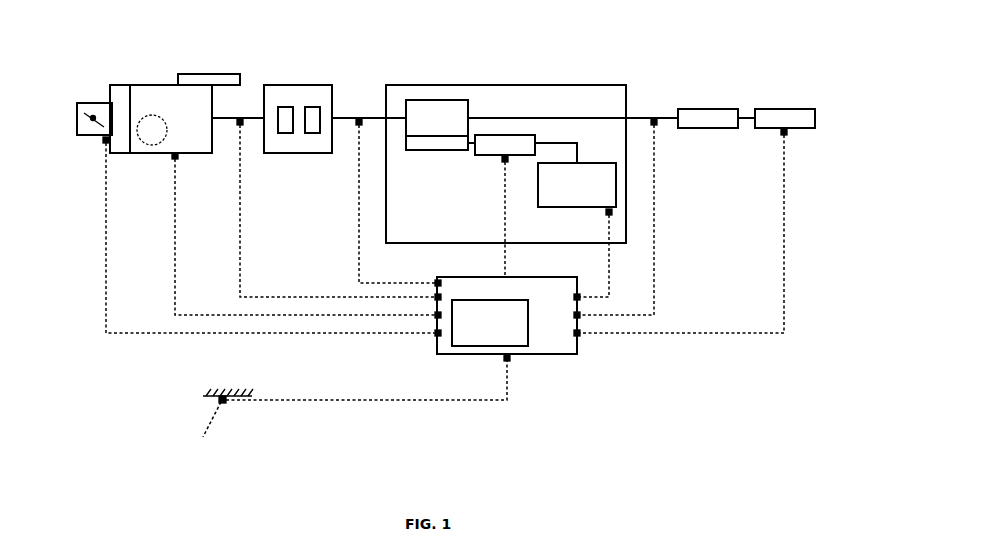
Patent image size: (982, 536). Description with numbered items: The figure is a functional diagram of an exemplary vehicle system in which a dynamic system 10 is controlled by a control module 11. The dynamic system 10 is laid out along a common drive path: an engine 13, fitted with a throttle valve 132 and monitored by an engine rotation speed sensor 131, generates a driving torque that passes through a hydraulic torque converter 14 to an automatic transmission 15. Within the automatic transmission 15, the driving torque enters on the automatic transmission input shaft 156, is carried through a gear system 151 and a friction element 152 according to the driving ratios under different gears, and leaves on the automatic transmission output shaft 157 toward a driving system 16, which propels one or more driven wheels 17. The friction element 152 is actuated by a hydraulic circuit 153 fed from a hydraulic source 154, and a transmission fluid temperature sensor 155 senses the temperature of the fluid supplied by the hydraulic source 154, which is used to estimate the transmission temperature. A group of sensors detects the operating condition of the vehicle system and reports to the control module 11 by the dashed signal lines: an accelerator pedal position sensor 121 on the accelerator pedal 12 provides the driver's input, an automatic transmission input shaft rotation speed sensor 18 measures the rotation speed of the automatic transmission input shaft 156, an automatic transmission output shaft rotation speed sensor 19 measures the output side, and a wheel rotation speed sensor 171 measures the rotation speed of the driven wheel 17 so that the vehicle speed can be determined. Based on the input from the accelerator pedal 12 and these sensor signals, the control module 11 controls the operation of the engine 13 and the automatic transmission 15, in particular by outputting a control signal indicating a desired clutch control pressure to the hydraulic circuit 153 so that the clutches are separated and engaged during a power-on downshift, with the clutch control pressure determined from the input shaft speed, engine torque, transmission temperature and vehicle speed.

The dynamic system 10 is at (99, 44).
The control module 11 is at (545, 355).
The accelerator pedal 12 is at (203, 428).
The accelerator pedal position sensor 121 is at (230, 405).
The engine 13 is at (152, 85).
The engine rotation speed sensor 131 is at (106, 143).
The throttle valve 132 is at (88, 103).
The hydraulic torque converter 14 is at (295, 85).
The automatic transmission 15 is at (508, 85).
The gear system 151 is at (468, 106).
The friction element 152 is at (440, 150).
The hydraulic circuit 153 is at (497, 156).
The hydraulic source 154 is at (580, 208).
The transmission fluid temperature sensor 155 is at (607, 213).
The automatic transmission input shaft 156 is at (365, 112).
The automatic transmission output shaft 157 is at (580, 117).
The driving system 16 is at (708, 109).
The driven wheel 17 is at (785, 109).
The wheel rotation speed sensor 171 is at (792, 136).
The automatic transmission input shaft rotation speed sensor 18 is at (357, 112).
The automatic transmission output shaft rotation speed sensor 19 is at (652, 115).